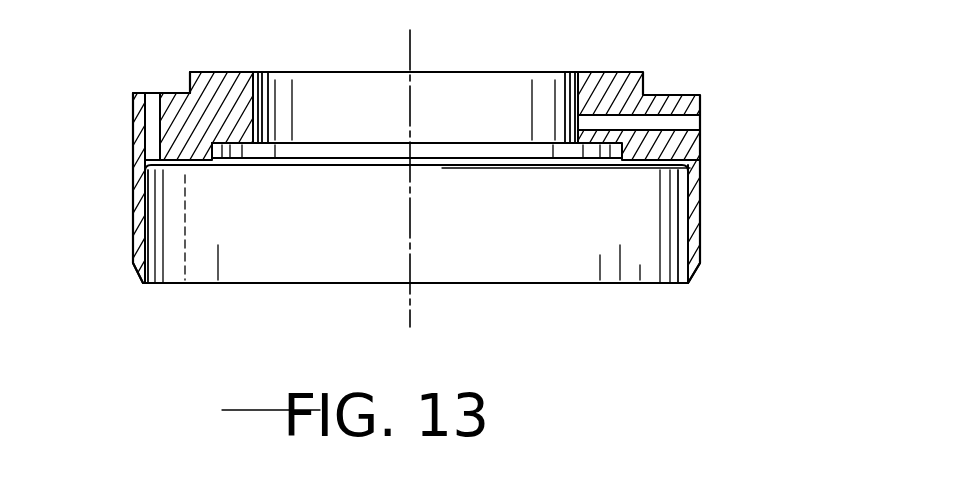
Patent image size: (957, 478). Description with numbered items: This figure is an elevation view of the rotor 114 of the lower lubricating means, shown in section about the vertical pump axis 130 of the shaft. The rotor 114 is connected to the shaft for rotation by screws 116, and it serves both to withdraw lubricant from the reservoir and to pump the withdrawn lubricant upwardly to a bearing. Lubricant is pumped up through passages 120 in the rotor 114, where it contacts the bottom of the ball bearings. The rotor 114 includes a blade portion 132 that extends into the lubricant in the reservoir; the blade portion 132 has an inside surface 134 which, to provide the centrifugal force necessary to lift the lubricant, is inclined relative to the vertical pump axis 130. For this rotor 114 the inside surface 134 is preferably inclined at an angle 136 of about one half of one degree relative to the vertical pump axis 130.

The rotor 114 is at (700, 202).
The screws 116 is at (690, 120).
The passages 120 is at (153, 105).
The vertical pump axis 130 is at (405, 312).
The blade portion 132 is at (133, 212).
The inside surface 134 is at (147, 227).
The angle 136 is at (684, 216).